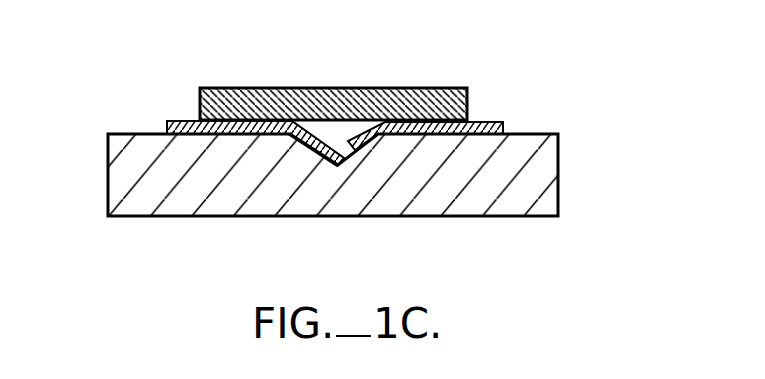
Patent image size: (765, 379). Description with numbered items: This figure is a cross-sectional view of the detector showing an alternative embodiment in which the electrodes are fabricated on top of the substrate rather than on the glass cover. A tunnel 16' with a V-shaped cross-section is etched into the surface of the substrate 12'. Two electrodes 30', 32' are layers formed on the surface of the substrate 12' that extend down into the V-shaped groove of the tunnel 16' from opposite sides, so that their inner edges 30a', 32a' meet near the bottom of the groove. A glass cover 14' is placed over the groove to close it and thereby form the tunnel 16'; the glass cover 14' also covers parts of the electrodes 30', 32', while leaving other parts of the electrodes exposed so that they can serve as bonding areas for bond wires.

The substrate 12' is at (384, 175).
The glass cover 14' is at (366, 71).
The tunnel 16' is at (380, 66).
The electrode 30' is at (203, 111).
The electrode 32' is at (469, 101).
The edge of first metal layer 30a' is at (290, 225).
The edge of second metal layer 32a' is at (424, 215).